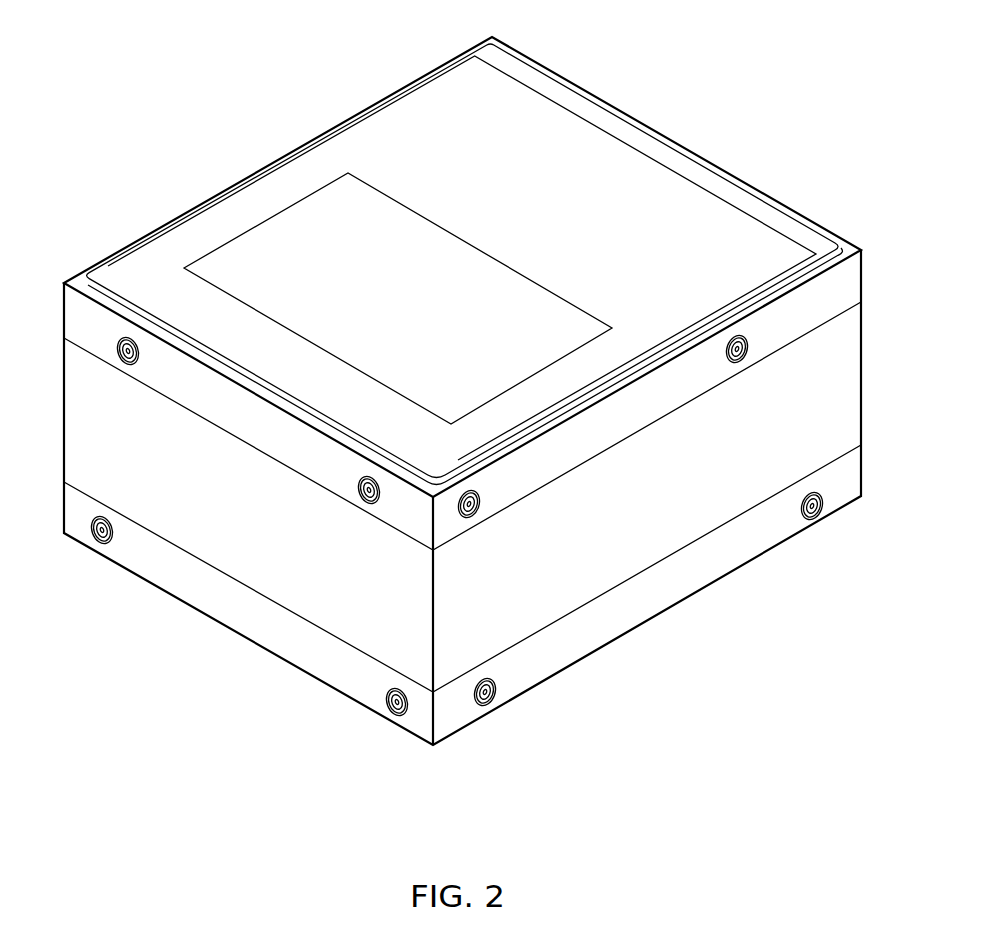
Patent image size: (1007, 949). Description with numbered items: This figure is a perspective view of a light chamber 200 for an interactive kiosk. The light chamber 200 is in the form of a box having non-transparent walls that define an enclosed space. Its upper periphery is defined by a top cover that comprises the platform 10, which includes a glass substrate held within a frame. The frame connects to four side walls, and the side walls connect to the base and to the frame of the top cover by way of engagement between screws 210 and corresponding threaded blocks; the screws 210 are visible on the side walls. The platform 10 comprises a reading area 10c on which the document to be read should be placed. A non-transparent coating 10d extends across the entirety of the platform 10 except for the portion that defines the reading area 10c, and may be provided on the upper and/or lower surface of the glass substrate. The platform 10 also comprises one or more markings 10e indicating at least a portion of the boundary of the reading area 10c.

The platform 10 is at (447, 378).
The reading area 10c is at (325, 248).
The non-transparent coating 10d is at (460, 137).
The markings 10e is at (216, 248).
The light chamber 200 is at (447, 391).
The screws 210 is at (817, 512).